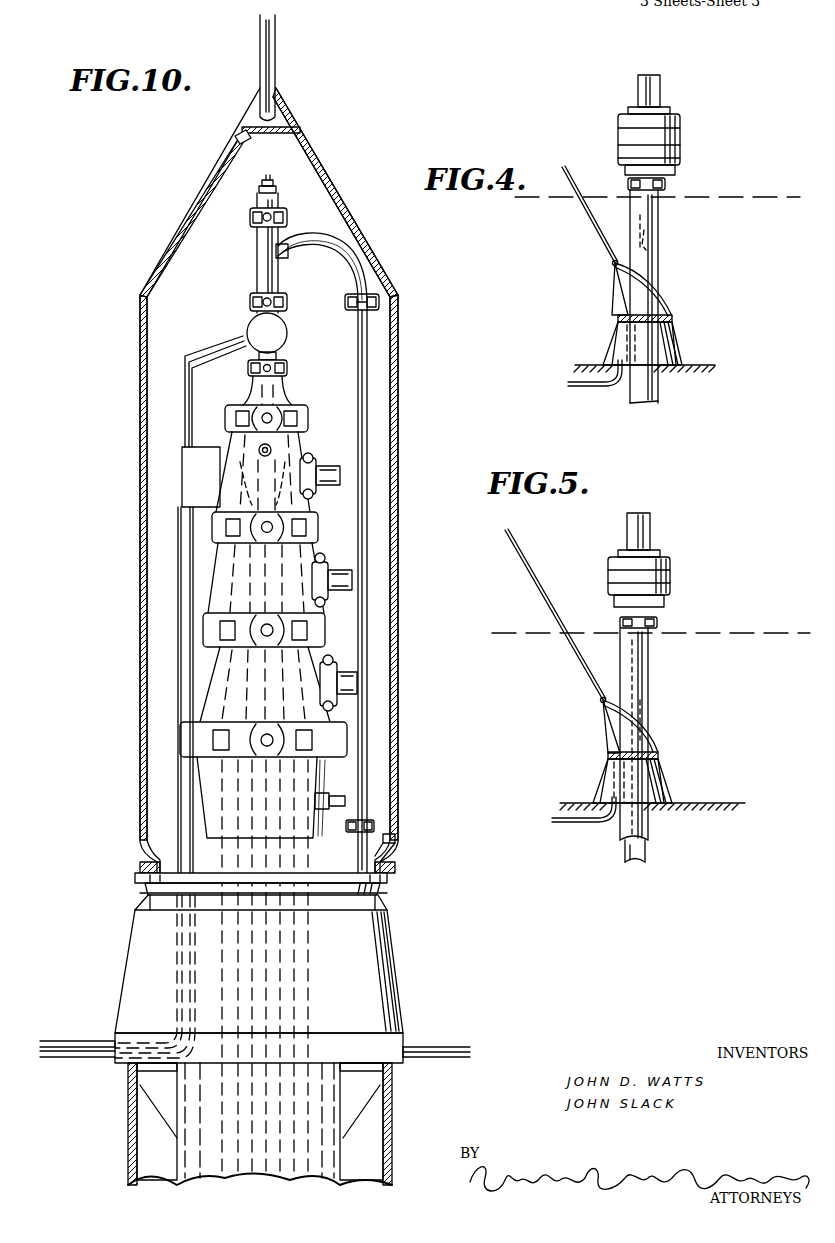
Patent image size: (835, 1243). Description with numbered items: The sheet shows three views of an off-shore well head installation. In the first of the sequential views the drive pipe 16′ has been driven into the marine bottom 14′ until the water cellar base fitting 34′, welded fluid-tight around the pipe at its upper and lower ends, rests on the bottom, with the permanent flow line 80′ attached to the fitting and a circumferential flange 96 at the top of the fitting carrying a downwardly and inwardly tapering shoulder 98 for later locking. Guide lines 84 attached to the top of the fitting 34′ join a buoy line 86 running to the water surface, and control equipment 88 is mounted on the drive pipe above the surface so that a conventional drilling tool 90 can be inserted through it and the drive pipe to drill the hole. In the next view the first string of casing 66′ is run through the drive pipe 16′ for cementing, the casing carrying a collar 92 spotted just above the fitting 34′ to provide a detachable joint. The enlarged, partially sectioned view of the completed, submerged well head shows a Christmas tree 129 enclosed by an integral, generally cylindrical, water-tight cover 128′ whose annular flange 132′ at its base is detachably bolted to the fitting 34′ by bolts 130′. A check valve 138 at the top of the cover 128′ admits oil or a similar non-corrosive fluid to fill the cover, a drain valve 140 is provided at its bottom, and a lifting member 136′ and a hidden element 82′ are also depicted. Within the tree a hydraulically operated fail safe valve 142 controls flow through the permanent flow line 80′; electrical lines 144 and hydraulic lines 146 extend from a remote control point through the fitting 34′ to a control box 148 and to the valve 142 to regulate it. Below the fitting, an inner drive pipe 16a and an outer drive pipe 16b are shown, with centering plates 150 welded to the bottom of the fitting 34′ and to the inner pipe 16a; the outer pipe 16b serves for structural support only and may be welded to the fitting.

In FIG. 10, the lifting rod 136′ is at (275, 60).
In FIG. 10, the check valve 138 is at (236, 135).
In FIG. 10, the permanent flow line 80′ is at (347, 245).
In FIG. 4, the permanent flow line 80′ is at (582, 390).
In FIG. 5, the permanent flow line 80′ is at (578, 826).
In FIG. 10, the fail safe valve 142 is at (282, 333).
In FIG. 10, the cover 128′ is at (402, 424).
In FIG. 10, the control box 148 is at (190, 473).
In FIG. 10, the Christmas tree 129 is at (215, 562).
In FIG. 10, the electrical lines 144 is at (178, 638).
In FIG. 10, the hydraulic lines 146 is at (193, 677).
In FIG. 10, the drain valve 140 is at (392, 838).
In FIG. 10, the bolts 130′ is at (140, 862).
In FIG. 10, the annular flange 132′ is at (135, 876).
In FIG. 10, the shoulder 98 is at (380, 890).
In FIG. 4, the shoulder 98 is at (618, 322).
In FIG. 5, the shoulder 98 is at (612, 760).
In FIG. 10, the water cellar base fitting 34′ is at (386, 968).
In FIG. 4, the water cellar base fitting 34′ is at (670, 342).
In FIG. 5, the water cellar base fitting 34′ is at (662, 782).
In FIG. 10, the centering plates 150 is at (160, 1100).
In FIG. 10, the outer drive pipe 16b is at (128, 1140).
In FIG. 10, the inner drive pipe 16a is at (160, 1182).
In FIG. 4, the control equipment 88 is at (690, 150).
In FIG. 5, the control equipment 88 is at (680, 596).
In FIG. 4, the buoy line 86 is at (585, 215).
In FIG. 5, the buoy line 86 is at (570, 655).
In FIG. 4, the drilling tool 90 is at (660, 235).
In FIG. 4, the drive pipe 16′ is at (660, 272).
In FIG. 5, the drive pipe 16′ is at (650, 648).
In FIG. 4, the guide lines 84 is at (615, 283).
In FIG. 5, the guide lines 84 is at (607, 728).
In FIG. 4, the circumferential flange 96 is at (668, 314).
In FIG. 5, the circumferential flange 96 is at (660, 753).
In FIG. 4, the hidden line 82′ is at (623, 350).
In FIG. 5, the hidden line 82′ is at (612, 783).
In FIG. 4, the marine bottom 14′ is at (705, 367).
In FIG. 5, the marine bottom 14′ is at (718, 804).
In FIG. 5, the first string of casing 66′ is at (650, 676).
In FIG. 5, the collar 92 is at (650, 726).